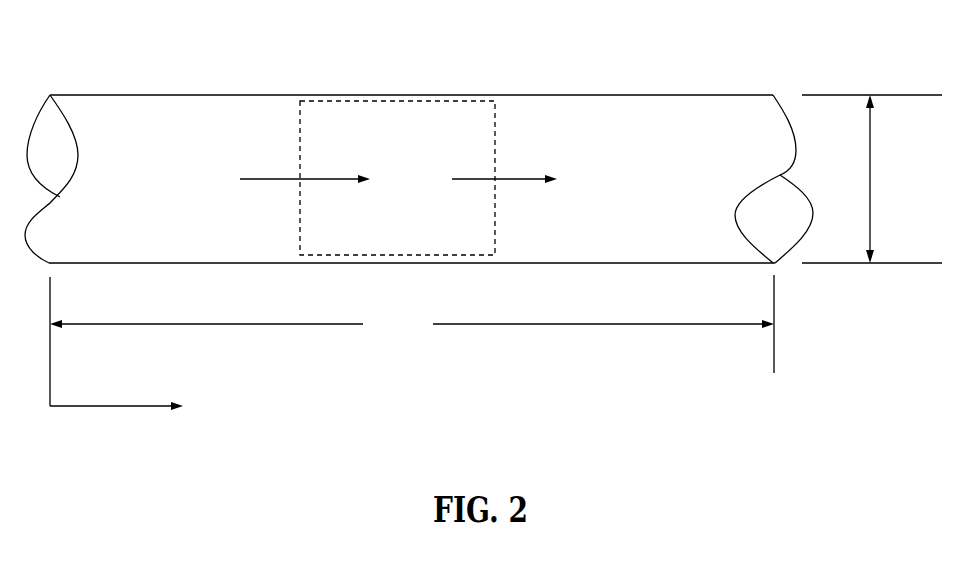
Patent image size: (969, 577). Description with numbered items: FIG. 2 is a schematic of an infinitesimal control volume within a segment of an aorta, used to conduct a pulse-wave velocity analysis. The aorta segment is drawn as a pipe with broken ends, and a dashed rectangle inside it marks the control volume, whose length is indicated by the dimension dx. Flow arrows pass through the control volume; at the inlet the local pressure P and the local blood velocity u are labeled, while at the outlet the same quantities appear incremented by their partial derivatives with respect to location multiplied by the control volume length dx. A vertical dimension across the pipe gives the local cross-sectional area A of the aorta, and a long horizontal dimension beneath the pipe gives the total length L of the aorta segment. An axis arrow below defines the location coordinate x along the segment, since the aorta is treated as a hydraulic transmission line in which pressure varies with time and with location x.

The control volume length dx is at (484, 45).
The local pressure P is at (273, 181).
The local blood velocity u is at (664, 214).
The local cross-sectional area A is at (885, 179).
The total length of aorta segment L is at (412, 340).
The axial location coordinate x is at (132, 406).